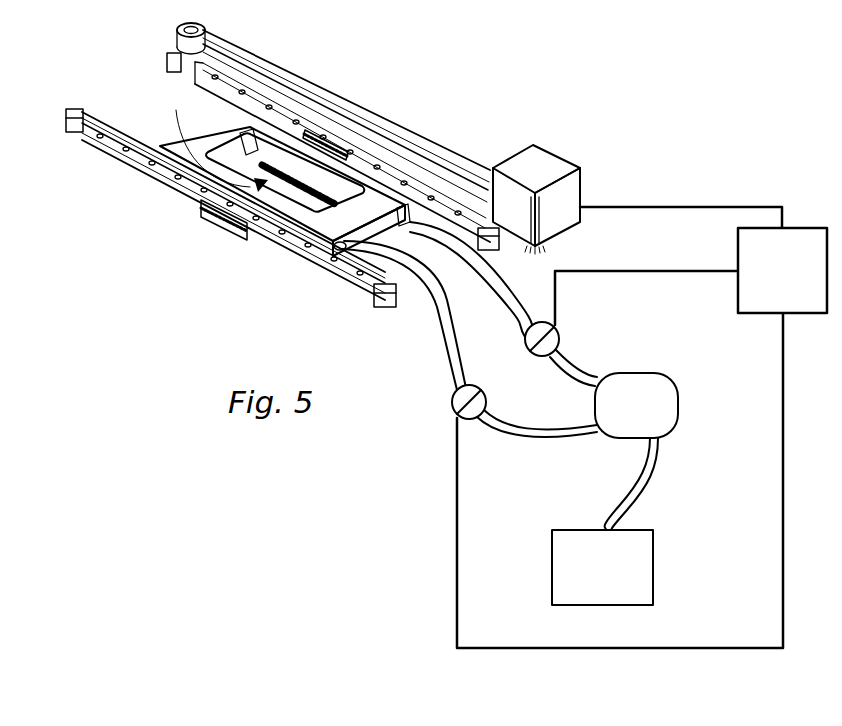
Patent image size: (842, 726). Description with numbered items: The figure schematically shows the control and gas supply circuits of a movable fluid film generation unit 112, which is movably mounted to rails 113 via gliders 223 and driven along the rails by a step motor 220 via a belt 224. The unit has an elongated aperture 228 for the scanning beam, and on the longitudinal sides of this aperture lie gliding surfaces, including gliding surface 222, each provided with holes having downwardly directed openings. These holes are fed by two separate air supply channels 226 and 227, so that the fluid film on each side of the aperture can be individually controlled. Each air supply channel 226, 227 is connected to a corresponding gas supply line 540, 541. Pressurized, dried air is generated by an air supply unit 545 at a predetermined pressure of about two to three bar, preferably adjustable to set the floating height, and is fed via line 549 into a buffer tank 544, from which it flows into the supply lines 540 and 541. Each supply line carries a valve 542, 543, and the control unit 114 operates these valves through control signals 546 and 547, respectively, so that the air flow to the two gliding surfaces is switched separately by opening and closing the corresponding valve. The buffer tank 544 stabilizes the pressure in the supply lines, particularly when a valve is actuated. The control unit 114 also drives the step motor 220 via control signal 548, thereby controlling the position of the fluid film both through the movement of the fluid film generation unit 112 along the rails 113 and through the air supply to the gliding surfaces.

The fluid film generation unit 112 is at (310, 169).
The rails 113 is at (291, 180).
The control unit 114 is at (772, 218).
The step motor 220 is at (559, 183).
The gliding surface 222 is at (361, 159).
The gliders 223 is at (286, 155).
The belt 224 is at (333, 104).
The air supply channel 226 is at (298, 276).
The air supply channel 227 is at (481, 127).
The elongated aperture 228 is at (250, 227).
The gas supply line 540 is at (396, 315).
The gas supply line 541 is at (522, 279).
The valve 542 is at (404, 425).
The valve 543 is at (583, 327).
The buffer tank 544 is at (600, 431).
The air supply unit 545 is at (565, 567).
The control signal 546 is at (569, 480).
The control signal 547 is at (647, 312).
The control signal 548 is at (681, 191).
The line 549 is at (672, 485).